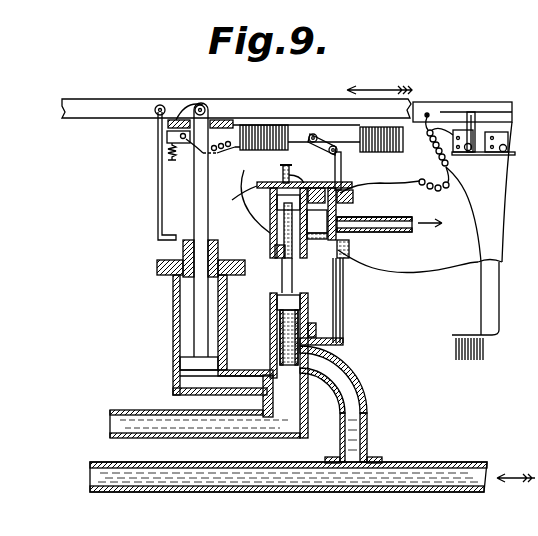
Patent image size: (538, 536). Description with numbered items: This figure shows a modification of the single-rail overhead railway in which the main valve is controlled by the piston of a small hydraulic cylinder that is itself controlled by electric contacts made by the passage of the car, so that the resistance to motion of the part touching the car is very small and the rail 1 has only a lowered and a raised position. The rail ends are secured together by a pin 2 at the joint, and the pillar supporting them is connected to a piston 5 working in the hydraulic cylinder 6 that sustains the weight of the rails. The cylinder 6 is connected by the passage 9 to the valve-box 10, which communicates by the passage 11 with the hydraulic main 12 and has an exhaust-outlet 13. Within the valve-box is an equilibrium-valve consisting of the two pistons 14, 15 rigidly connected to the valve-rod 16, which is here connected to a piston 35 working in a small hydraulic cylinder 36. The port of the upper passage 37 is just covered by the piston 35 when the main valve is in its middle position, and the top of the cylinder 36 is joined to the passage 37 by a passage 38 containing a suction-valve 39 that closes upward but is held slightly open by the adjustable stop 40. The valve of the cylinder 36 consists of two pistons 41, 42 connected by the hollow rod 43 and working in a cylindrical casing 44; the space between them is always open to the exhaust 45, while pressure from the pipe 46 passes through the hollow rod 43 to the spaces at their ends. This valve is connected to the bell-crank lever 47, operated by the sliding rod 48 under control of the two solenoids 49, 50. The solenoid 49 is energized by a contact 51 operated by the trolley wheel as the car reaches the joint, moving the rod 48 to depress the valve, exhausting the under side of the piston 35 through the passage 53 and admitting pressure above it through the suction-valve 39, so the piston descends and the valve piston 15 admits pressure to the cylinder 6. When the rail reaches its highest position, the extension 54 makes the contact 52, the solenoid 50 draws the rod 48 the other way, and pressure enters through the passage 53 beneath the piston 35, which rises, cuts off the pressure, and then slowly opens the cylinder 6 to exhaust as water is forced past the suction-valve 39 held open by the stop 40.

The overhead rail 1 is at (287, 109).
The pin 2 is at (206, 107).
The piston 5 is at (200, 367).
The hydraulic cylinder 6 is at (188, 306).
The passage 9 is at (236, 383).
The valve-box 10 is at (306, 329).
The passage 11 is at (362, 405).
The hydraulic main 12 is at (392, 470).
The exhaust-outlet 13 is at (180, 426).
The piston 14 is at (290, 302).
The piston 15 is at (287, 367).
The valve-rod 16 is at (292, 281).
The piston 35 is at (283, 203).
The small hydraulic cylinder 36 is at (271, 233).
The upper passage 37 is at (350, 202).
The passage 38 is at (300, 161).
The suction-valve 39 is at (240, 201).
The adjustable screw or stop 40 is at (284, 172).
The piston 41 is at (426, 187).
The piston 42 is at (350, 242).
The hollow rod 43 is at (410, 218).
The cylindrical casing 44 is at (394, 255).
The exhaust 45 is at (412, 231).
The pipe 46 is at (343, 300).
The bell-crank lever 47 is at (351, 167).
The sliding rod 48 is at (292, 137).
The solenoid 49 is at (382, 114).
The solenoid 50 is at (282, 147).
The contact 51 is at (470, 118).
The contact 52 is at (177, 150).
The passage 53 is at (318, 248).
The extension 54 is at (175, 238).